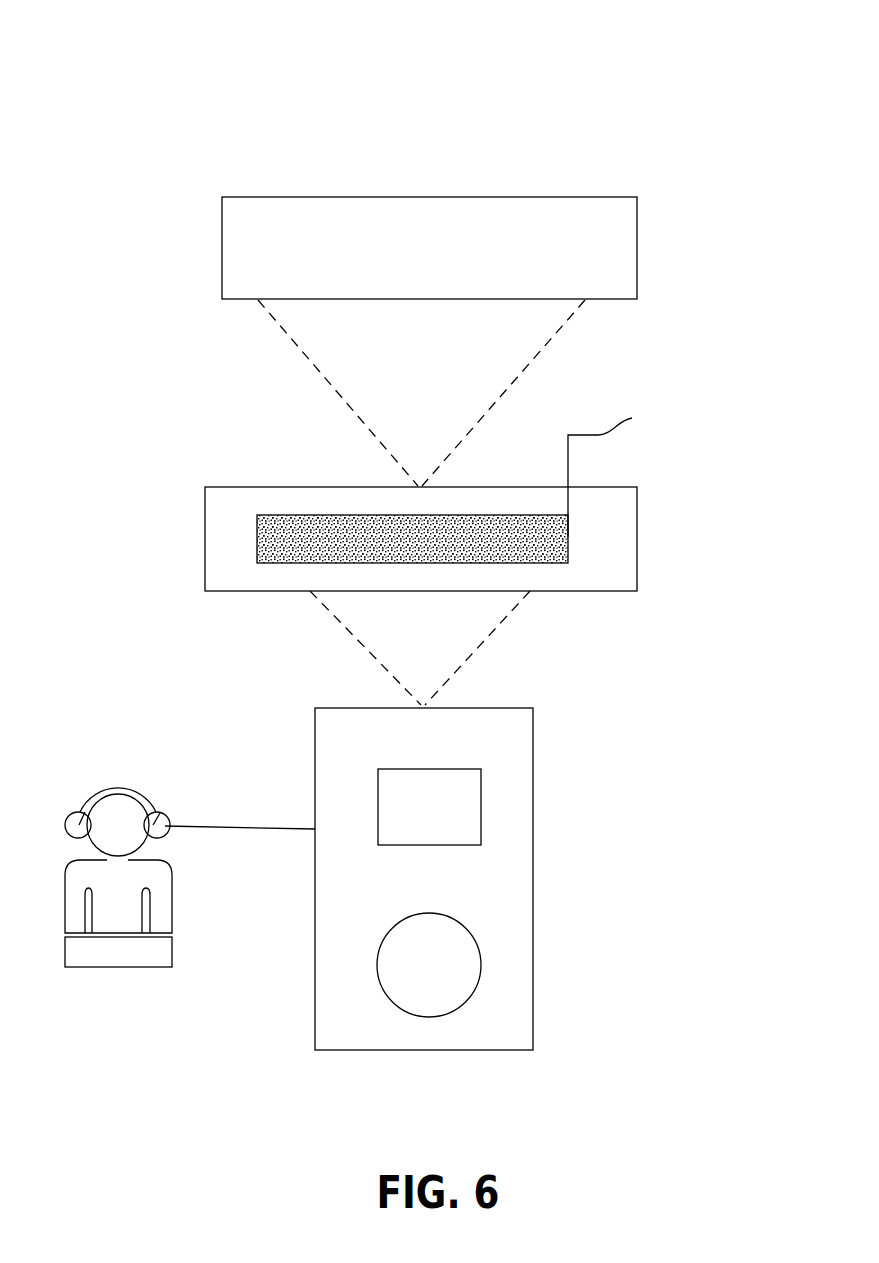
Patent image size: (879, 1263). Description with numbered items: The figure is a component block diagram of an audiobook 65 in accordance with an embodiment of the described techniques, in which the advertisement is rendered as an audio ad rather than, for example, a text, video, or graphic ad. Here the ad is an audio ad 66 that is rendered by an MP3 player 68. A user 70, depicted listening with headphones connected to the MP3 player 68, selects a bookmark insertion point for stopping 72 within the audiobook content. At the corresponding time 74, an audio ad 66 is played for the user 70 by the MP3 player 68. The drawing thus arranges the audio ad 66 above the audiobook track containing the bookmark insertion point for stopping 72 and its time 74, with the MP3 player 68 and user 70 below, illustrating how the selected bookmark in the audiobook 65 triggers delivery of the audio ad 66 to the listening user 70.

The audiobook 65 is at (354, 57).
The audio ad 66 is at (637, 197).
The MP3 player 68 is at (533, 940).
The user 70 is at (172, 875).
The bookmark insertion point for stopping 72 is at (568, 537).
The time 74 is at (690, 409).